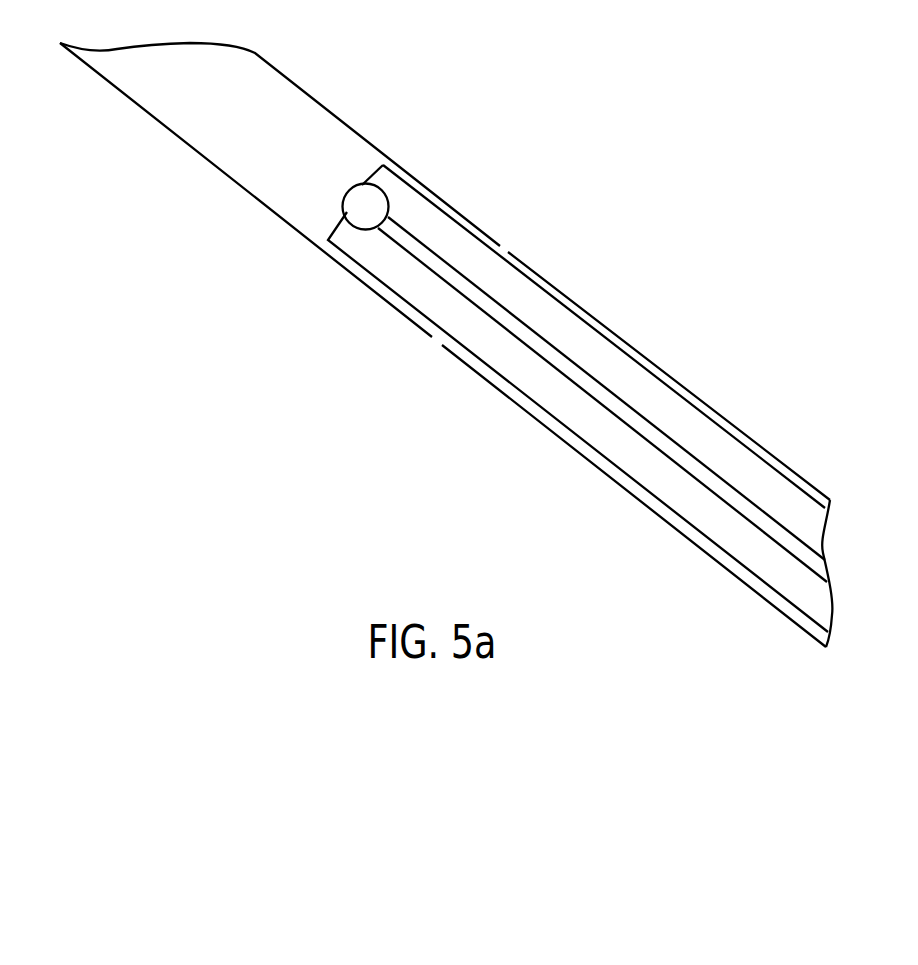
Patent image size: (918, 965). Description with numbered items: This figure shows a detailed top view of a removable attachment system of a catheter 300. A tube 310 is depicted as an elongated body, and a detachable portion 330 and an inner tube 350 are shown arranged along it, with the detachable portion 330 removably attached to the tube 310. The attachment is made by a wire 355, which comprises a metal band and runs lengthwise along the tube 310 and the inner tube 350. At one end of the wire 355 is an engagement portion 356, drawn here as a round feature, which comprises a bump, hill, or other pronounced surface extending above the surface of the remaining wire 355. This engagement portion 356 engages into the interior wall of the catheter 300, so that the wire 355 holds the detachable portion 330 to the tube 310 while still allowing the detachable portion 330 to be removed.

The catheter 300 is at (351, 68).
The tube 310 is at (256, 152).
The detachable portion 330 is at (536, 280).
The inner tube 350 is at (428, 291).
The wire 355 is at (590, 374).
The engagement portion 356 is at (375, 198).